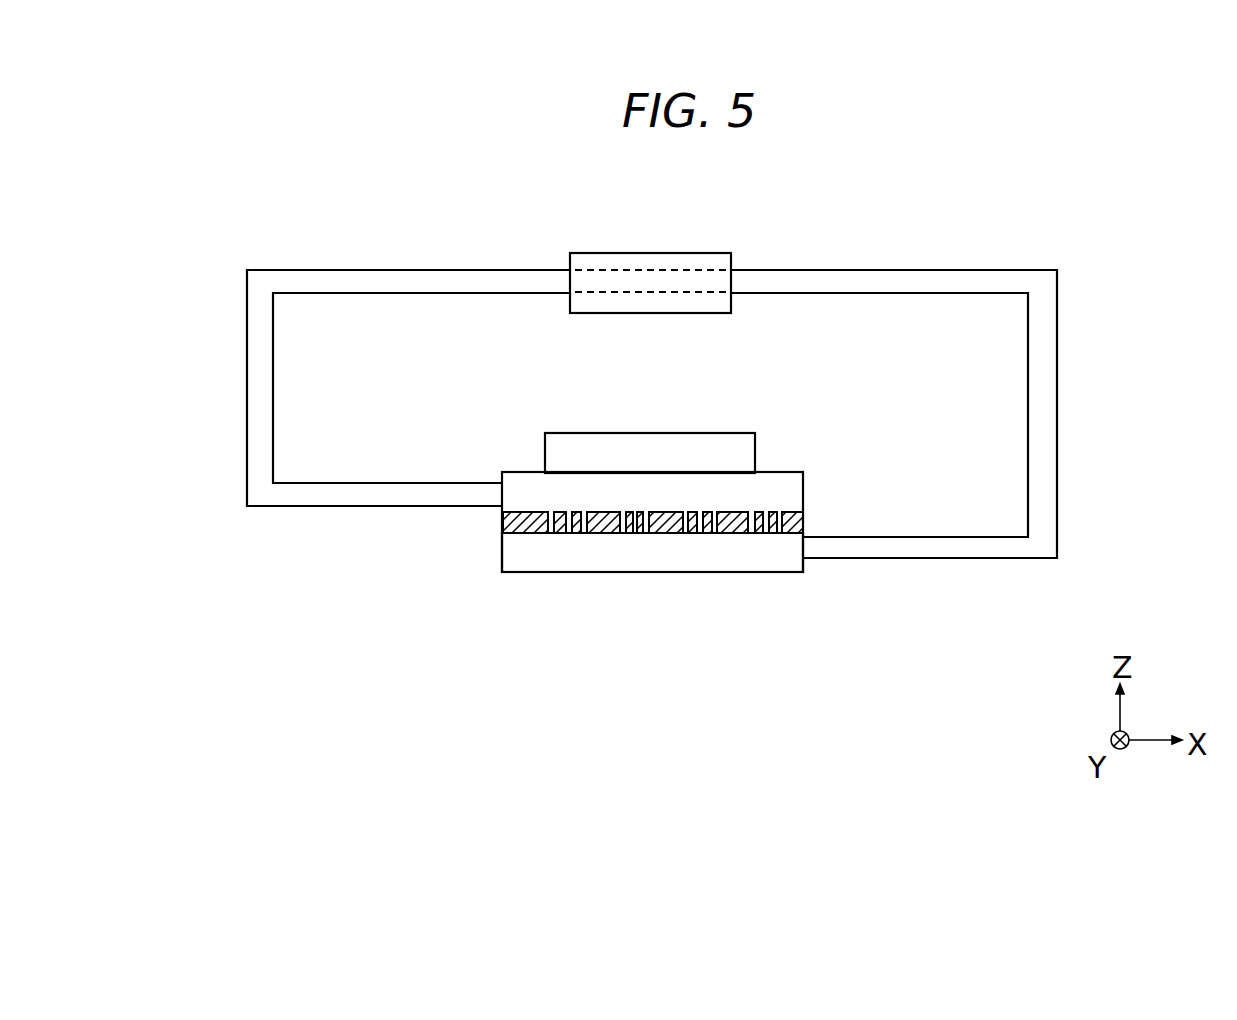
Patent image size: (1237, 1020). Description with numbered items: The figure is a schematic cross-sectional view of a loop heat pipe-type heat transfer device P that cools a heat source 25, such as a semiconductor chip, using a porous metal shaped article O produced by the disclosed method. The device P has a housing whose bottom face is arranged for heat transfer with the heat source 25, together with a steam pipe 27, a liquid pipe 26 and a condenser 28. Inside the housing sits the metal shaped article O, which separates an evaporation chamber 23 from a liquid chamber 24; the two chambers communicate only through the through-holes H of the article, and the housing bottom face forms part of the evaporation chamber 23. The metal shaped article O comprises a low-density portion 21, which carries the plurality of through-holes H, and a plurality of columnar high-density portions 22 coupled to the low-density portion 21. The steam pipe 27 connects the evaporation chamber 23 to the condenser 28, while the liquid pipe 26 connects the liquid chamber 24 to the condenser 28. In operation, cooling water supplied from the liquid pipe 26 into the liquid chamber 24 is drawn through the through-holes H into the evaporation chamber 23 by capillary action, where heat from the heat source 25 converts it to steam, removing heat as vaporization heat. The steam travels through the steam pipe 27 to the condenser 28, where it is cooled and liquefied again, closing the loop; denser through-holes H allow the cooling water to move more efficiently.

The low-density portion 21 is at (562, 511).
The high-density portion 22 is at (514, 510).
The evaporation chamber 23 is at (793, 490).
The liquid chamber 24 is at (782, 565).
The heat source 25 is at (690, 443).
The liquid pipe 26 is at (1047, 390).
The steam pipe 27 is at (260, 380).
The condenser 28 is at (703, 278).
The metal shaped article O is at (503, 518).
The loop heat pipe-type heat transfer device P is at (595, 573).
The through-hole H is at (686, 537).